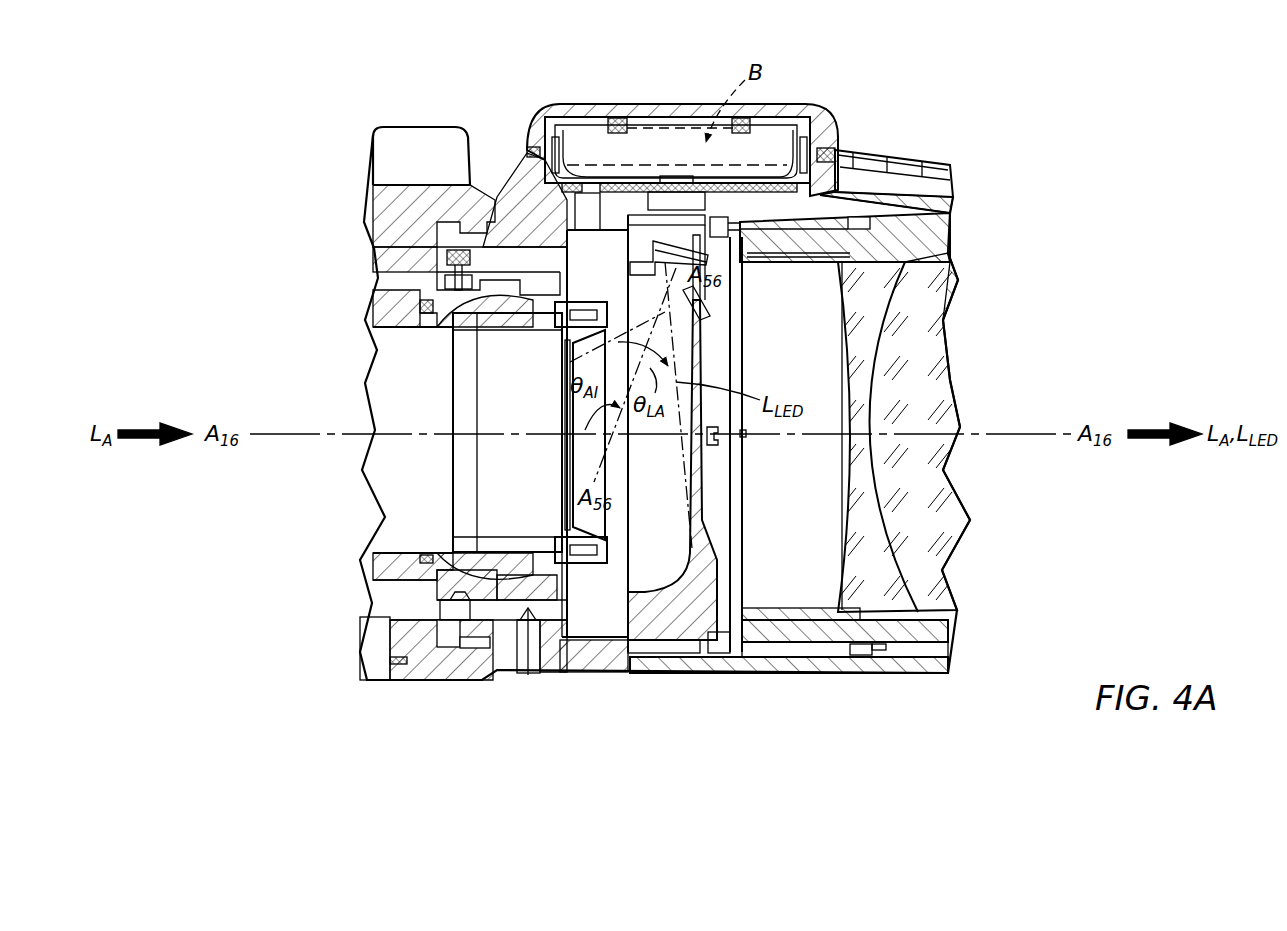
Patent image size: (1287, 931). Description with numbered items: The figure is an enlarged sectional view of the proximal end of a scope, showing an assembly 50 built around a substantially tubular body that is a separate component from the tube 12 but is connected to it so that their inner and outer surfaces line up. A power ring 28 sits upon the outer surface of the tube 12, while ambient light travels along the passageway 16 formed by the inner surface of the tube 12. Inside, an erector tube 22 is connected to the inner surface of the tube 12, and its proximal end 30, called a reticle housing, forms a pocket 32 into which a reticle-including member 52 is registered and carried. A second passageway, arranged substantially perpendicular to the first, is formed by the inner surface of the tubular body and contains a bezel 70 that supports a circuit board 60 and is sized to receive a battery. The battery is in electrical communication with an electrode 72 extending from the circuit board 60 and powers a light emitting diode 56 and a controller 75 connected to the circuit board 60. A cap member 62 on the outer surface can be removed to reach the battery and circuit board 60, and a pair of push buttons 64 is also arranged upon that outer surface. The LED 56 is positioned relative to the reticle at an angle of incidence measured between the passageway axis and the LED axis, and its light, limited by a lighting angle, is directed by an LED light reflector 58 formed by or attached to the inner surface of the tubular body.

The assembly 50 is at (215, 96).
The tube 12 is at (358, 262).
The power ring 28 is at (418, 183).
The proximal end of the erector tube 30 is at (484, 246).
The erector tube 22 is at (376, 322).
The passageway 16 is at (393, 376).
The reticle-including member 52 is at (575, 548).
The pocket 32 is at (553, 664).
The bezel 70 is at (582, 298).
The cap member 62 is at (695, 98).
The electrode 72 is at (680, 203).
The controller 75 is at (768, 196).
The circuit board 60 is at (750, 205).
The pair of push buttons 64 is at (912, 152).
The light emitting diode (LED) 56 is at (686, 308).
The LED light reflector 58 is at (666, 600).